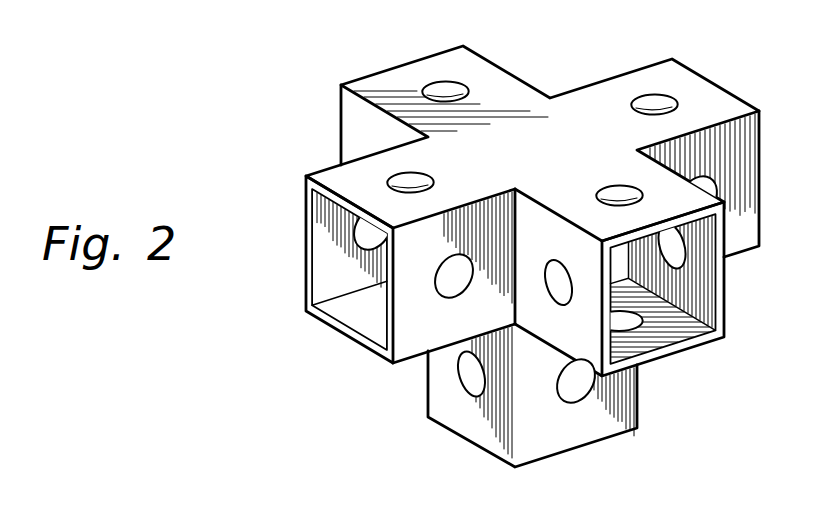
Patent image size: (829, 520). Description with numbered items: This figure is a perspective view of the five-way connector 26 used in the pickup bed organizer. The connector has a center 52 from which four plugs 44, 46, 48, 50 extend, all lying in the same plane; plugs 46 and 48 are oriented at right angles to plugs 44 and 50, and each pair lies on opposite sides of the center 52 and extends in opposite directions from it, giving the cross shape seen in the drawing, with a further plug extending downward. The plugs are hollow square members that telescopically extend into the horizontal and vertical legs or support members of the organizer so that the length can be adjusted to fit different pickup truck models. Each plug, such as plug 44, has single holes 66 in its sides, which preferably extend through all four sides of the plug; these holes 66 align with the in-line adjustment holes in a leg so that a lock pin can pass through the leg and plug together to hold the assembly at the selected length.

The five-way connector 26 is at (493, 239).
The plug 44 is at (698, 92).
The plug 46 is at (725, 300).
The plug 48 is at (417, 73).
The plug 50 is at (305, 245).
The center 52 is at (557, 157).
The holes 66 is at (447, 92).